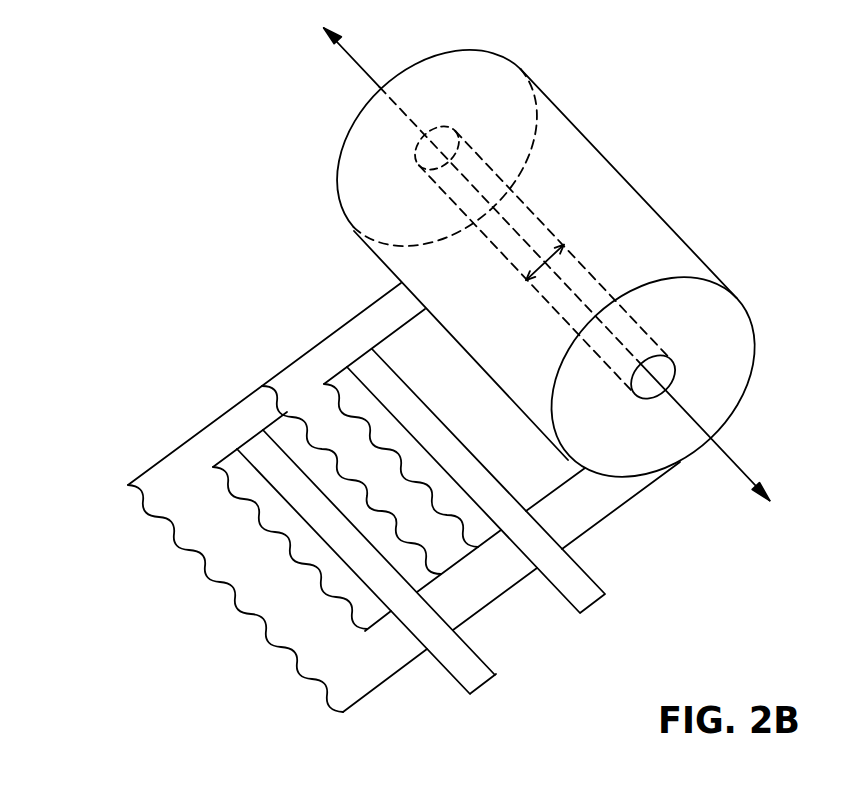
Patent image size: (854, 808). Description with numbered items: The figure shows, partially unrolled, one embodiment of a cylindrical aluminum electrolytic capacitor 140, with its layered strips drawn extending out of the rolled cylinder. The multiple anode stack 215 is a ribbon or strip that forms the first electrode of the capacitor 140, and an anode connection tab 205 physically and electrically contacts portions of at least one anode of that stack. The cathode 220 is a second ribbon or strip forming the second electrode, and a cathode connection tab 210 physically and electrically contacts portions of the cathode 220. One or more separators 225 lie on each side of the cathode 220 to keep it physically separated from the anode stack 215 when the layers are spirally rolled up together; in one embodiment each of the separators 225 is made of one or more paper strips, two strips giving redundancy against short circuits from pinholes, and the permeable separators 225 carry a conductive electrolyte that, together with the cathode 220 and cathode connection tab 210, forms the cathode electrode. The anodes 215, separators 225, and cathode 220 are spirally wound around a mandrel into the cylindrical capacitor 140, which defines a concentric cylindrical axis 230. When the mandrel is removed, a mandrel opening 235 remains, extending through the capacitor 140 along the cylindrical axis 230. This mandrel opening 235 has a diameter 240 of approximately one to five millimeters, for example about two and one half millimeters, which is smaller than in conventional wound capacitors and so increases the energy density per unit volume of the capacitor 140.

The cylindrical aluminum electrolytic capacitor 140 is at (684, 106).
The anode connection tab 205 is at (578, 583).
The cathode connection tab 210 is at (470, 675).
The multiple anode stack 215 is at (408, 345).
The cathode 220 is at (285, 522).
The separators 225 is at (297, 387).
The cylindrical axis 230 is at (356, 67).
The mandrel opening 235 is at (667, 366).
The diameter 240 is at (545, 244).